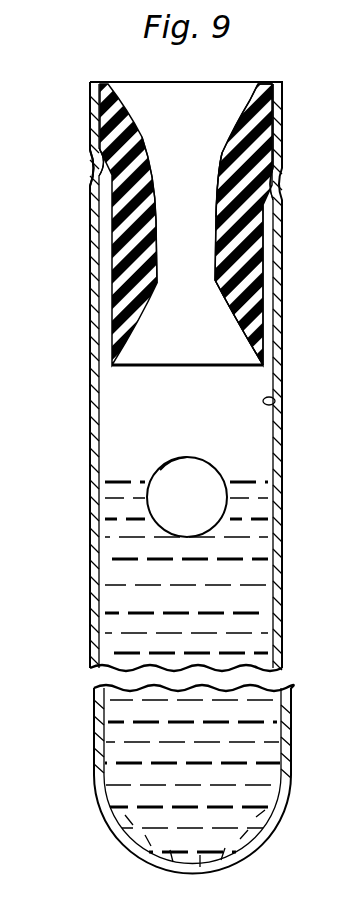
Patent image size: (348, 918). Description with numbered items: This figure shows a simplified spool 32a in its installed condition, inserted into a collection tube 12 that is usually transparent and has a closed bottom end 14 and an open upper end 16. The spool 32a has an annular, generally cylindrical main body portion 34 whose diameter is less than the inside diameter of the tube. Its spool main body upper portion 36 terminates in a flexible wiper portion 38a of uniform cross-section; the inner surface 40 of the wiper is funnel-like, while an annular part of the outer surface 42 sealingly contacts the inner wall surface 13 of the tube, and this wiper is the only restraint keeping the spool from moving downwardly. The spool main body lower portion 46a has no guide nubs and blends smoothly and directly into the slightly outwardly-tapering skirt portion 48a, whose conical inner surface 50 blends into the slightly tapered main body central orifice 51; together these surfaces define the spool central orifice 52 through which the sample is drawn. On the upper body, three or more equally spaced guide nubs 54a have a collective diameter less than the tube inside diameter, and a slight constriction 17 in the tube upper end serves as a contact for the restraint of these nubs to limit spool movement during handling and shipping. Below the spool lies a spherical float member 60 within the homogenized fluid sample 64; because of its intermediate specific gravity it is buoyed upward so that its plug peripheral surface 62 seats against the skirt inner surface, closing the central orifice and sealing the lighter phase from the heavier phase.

The collection tube 12 is at (283, 378).
The inner wall surface 13 is at (275, 403).
The closed bottom end 14 is at (269, 828).
The open upper end 16 is at (90, 100).
The constriction 17 is at (92, 182).
The spool 32a is at (257, 233).
The main body portion 34 is at (263, 210).
The spool main body upper portion 36 is at (263, 155).
The wiper portion 38a is at (277, 117).
The inner surface of wiper portion 40 is at (262, 97).
The outer surface of wiper portion 42 is at (283, 95).
The spool main body lower portion 46a is at (255, 292).
The skirt portion 48a is at (258, 343).
The inner surface of skirt portion 50 is at (232, 314).
The main body central orifice 51 is at (217, 153).
The spool central orifice 52 is at (197, 254).
The guide nubs 54a is at (100, 160).
The float member 60 is at (197, 483).
The plug peripheral surface 62 is at (172, 457).
The homogenized fluid sample 64 is at (262, 597).